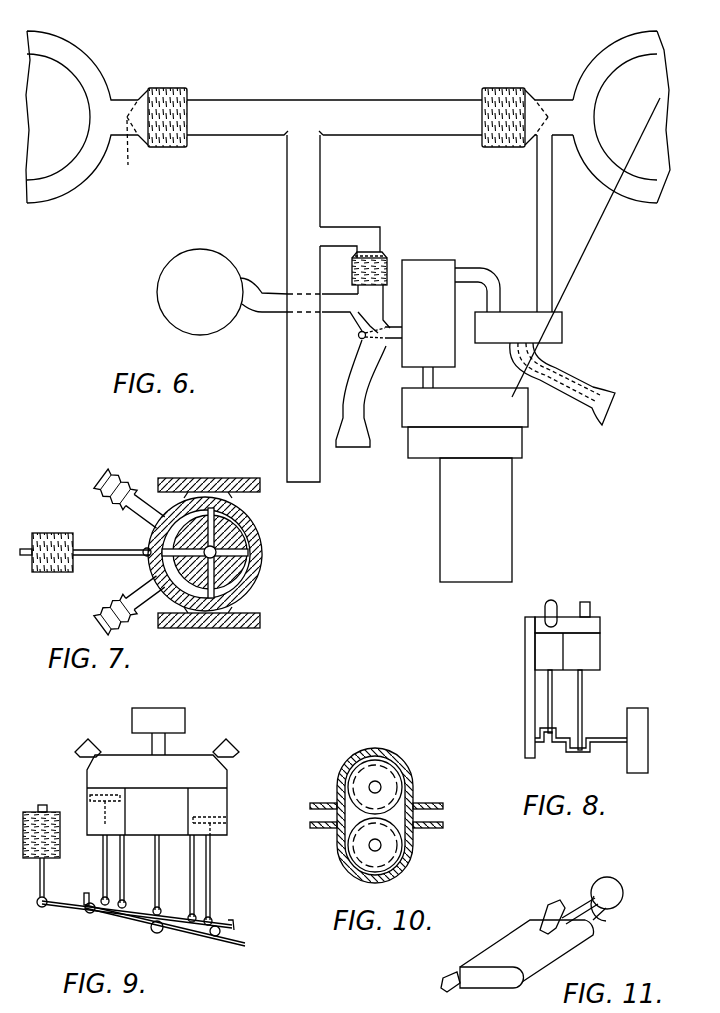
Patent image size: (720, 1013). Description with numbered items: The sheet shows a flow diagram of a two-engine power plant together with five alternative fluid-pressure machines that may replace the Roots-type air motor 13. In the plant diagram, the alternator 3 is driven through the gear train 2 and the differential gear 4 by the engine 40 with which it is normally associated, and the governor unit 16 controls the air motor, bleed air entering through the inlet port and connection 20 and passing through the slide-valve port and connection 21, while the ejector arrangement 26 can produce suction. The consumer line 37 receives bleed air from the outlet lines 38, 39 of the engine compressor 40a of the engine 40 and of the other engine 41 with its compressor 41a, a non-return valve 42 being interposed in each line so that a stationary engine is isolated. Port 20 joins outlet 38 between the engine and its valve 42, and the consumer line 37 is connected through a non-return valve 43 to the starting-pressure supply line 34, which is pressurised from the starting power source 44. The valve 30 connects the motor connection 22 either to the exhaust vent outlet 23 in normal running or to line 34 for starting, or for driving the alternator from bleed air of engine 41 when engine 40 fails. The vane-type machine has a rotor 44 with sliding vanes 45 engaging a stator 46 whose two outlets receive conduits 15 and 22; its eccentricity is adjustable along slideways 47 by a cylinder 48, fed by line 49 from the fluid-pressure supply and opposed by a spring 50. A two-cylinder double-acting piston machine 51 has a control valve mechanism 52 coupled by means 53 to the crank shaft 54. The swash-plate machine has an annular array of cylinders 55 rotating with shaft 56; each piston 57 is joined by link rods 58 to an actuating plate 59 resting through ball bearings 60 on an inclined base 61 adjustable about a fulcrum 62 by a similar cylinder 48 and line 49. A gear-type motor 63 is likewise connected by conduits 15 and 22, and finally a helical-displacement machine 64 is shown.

In FIG. 6, the gear train 2 is at (513, 441).
In FIG. 6, the alternator 3 is at (502, 493).
In FIG. 6, the differential gear 4 is at (465, 421).
In FIG. 8, the differential gear 4 is at (636, 708).
In FIG. 9, the differential gear 4 is at (186, 719).
In FIG. 11, the differential gear 4 is at (600, 888).
In FIG. 6, the Roots-type air motor 13 is at (442, 262).
In FIG. 7, the conduit 15 is at (113, 597).
In FIG. 8, the conduit 15 is at (591, 606).
In FIG. 9, the conduit 15 is at (80, 748).
In FIG. 10, the conduit 15 is at (322, 812).
In FIG. 11, the conduit 15 is at (443, 981).
In FIG. 6, the governor unit 16 is at (556, 329).
In FIG. 6, the bleed-air inlet port and connection 20 is at (535, 220).
In FIG. 6, the slide-valve port and connection 21 is at (495, 273).
In FIG. 6, the motor connection line 22 is at (396, 339).
In FIG. 7, the motor connection line 22 is at (148, 510).
In FIG. 8, the motor connection line 22 is at (549, 600).
In FIG. 9, the motor connection line 22 is at (230, 742).
In FIG. 10, the motor connection line 22 is at (428, 812).
In FIG. 11, the motor connection line 22 is at (548, 916).
In FIG. 6, the vent outlet 23 is at (350, 395).
In FIG. 6, the ejector arrangement 26 is at (558, 371).
In FIG. 6, the valve 30 is at (360, 333).
In FIG. 6, the starting-pressure supply line 34 is at (383, 315).
In FIG. 6, the consumer line 37 is at (303, 446).
In FIG. 6, the bleed-air outlet line 38 is at (551, 100).
In FIG. 6, the bleed-air outlet line 39 is at (120, 106).
In FIG. 6, the engine 40 is at (640, 109).
In FIG. 6, the engine compressor 40a is at (618, 44).
In FIG. 6, the other engine 41 is at (60, 128).
In FIG. 6, the engine compressor 41a is at (73, 57).
In FIG. 6, the non-return valve 42 is at (506, 92).
In FIG. 6, the non-return valve 43 is at (368, 256).
In FIG. 6, the starting power source / rotor 44 is at (210, 304).
In FIG. 7, the starting power source / rotor 44 is at (236, 534).
In FIG. 7, the sliding vanes 45 is at (240, 583).
In FIG. 7, the stator 46 is at (256, 562).
In FIG. 7, the slideways 47 is at (250, 494).
In FIG. 7, the cylinder 48 is at (55, 533).
In FIG. 9, the cylinder 48 is at (60, 838).
In FIG. 7, the line 49 is at (24, 557).
In FIG. 9, the line 49 is at (40, 806).
In FIG. 7, the spring 50 is at (58, 572).
In FIG. 8, the two-cylinder double-acting piston machine 51 is at (607, 651).
In FIG. 8, the control valve mechanism 52 is at (601, 626).
In FIG. 8, the coupling means 53 is at (530, 703).
In FIG. 8, the crank shaft 54 is at (605, 743).
In FIG. 9, the annular array of cylinders 55 is at (87, 811).
In FIG. 9, the shaft 56 is at (150, 742).
In FIG. 9, the piston 57 is at (227, 824).
In FIG. 9, the link rods 58 is at (192, 861).
In FIG. 9, the actuating plate 59 is at (86, 896).
In FIG. 9, the ball bearings 60 is at (234, 927).
In FIG. 9, the inclined base 61 is at (80, 911).
In FIG. 9, the fulcrum 62 is at (157, 933).
In FIG. 10, the gear-type motor 63 is at (400, 762).
In FIG. 11, the helical-displacement machine 64 is at (579, 960).